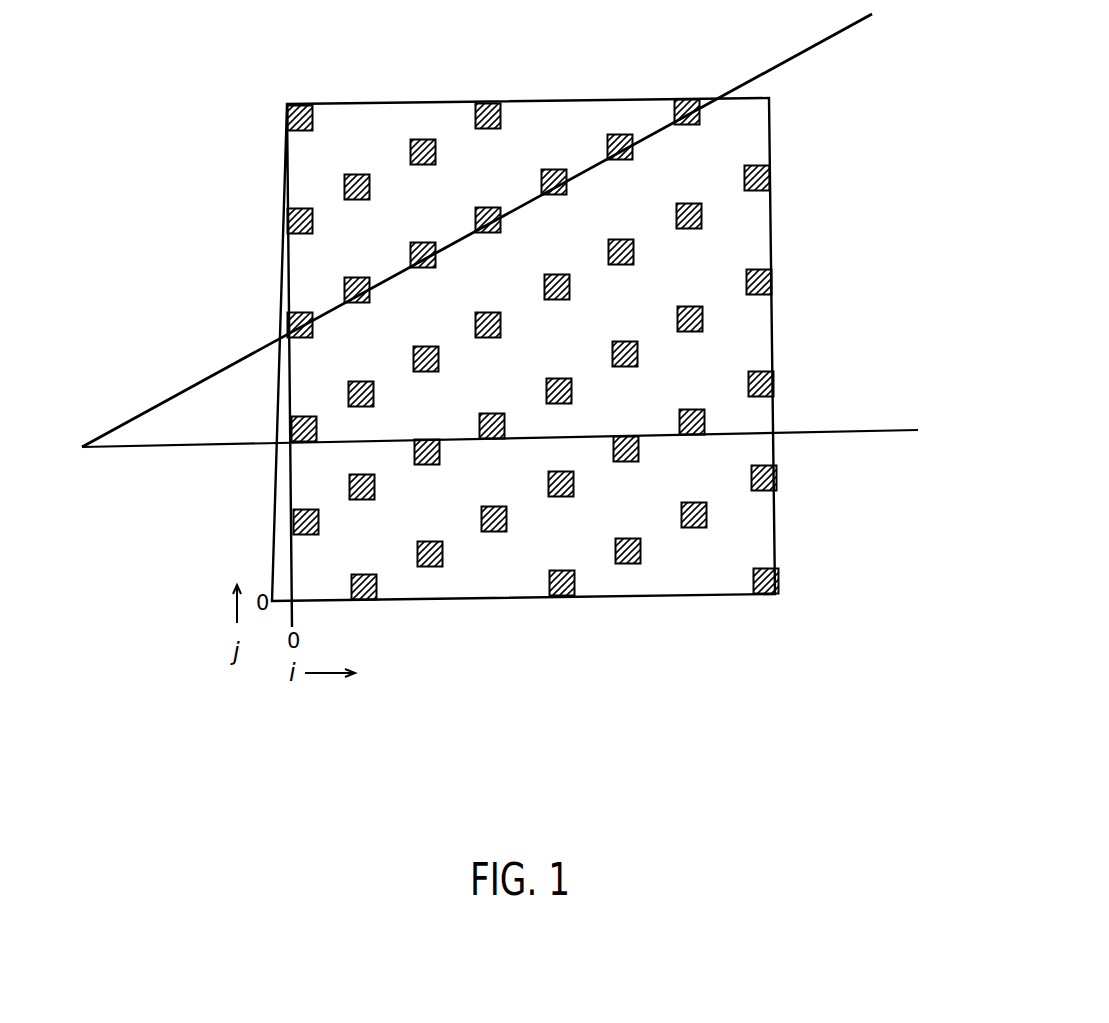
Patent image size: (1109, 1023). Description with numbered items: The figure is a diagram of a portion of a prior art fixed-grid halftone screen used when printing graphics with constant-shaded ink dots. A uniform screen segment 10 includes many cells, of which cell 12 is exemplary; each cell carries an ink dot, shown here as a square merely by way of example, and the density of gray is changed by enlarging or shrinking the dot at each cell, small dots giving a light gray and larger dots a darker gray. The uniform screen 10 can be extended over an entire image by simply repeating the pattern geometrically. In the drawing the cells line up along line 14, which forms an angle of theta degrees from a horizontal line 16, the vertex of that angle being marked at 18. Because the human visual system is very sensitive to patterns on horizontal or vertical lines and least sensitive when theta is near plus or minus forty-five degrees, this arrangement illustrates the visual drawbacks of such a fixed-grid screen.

The uniform screen segment 10 is at (690, 596).
The cell 12 is at (693, 230).
The line 14 is at (788, 58).
The horizontal line 16 is at (878, 430).
The origin vertex of angle theta 18 is at (132, 441).